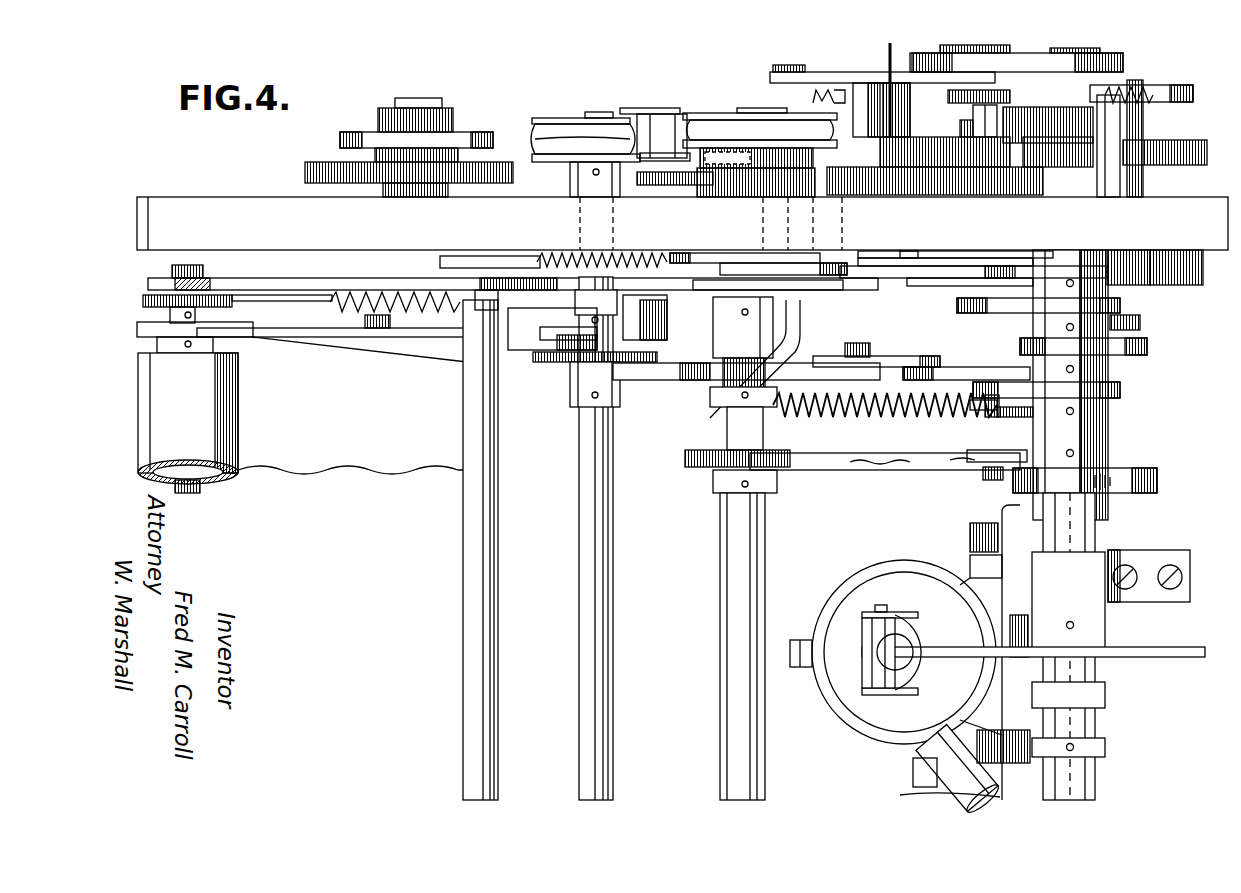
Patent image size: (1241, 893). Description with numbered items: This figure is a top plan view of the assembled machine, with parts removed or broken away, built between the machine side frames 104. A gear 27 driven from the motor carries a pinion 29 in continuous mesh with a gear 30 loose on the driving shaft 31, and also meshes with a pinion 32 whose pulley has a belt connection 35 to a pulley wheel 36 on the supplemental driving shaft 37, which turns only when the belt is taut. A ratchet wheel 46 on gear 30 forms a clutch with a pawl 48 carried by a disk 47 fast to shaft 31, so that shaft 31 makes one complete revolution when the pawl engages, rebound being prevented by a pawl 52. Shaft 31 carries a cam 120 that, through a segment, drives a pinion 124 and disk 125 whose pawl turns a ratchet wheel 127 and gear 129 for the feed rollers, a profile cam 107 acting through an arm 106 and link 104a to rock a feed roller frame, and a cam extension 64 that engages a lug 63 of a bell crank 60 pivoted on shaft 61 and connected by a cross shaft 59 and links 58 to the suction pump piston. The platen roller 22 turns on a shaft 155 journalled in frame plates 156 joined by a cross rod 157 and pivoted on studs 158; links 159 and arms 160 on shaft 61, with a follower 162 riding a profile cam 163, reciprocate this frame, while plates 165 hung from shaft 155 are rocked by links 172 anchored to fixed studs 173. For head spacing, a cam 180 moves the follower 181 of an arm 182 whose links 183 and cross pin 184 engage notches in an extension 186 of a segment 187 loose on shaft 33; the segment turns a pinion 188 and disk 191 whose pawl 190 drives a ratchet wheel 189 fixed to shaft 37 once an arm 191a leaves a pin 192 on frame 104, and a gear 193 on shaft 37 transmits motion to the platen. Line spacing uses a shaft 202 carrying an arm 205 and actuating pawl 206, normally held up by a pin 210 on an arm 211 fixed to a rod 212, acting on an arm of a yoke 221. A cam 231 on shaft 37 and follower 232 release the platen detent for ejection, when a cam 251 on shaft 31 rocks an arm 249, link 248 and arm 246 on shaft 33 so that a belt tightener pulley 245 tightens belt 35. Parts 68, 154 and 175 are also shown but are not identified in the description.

The platen roller 22 is at (222, 405).
The gear 27 is at (1020, 196).
The pinion 29 is at (892, 80).
The gear 30 is at (1196, 150).
The driving shaft 31 is at (1072, 52).
The pinion 32 is at (795, 195).
The shaft 33 is at (768, 530).
The belt connection 35 is at (596, 133).
The pulley wheel 36 is at (555, 120).
The supplemental driving shaft 37 is at (613, 565).
The ratchet wheel 46 is at (1140, 118).
The disk 47 is at (1180, 92).
The pawl 48 is at (983, 130).
The pawl 52 is at (1108, 90).
The links 58 is at (910, 613).
The cross shaft 59 is at (881, 606).
The bell crank 60 is at (947, 647).
The shaft 61 is at (1088, 779).
The lug 63 is at (1017, 614).
The cam extension 64 is at (1095, 630).
The cylinder 68 is at (960, 785).
The machine side frames 104 is at (262, 214).
The link 104a is at (1110, 250).
The arm 106 is at (1175, 262).
The profile cam 107 is at (1053, 263).
The cam 120 is at (1018, 60).
The pinion 124 is at (445, 108).
The disk 125 is at (463, 132).
The ratchet wheel 127 is at (368, 155).
The gear 129 is at (502, 180).
The collar 154 is at (1100, 745).
The shaft 155 is at (205, 271).
The frame plates 156 is at (283, 286).
The cross rod 157 is at (492, 578).
The pivot studs 158 is at (520, 258).
The links 159 is at (875, 282).
The arm 160 is at (950, 280).
The follower 162 is at (1135, 320).
The profile cam 163 is at (1130, 305).
The plates 165 is at (180, 330).
The link 172 is at (303, 325).
The fixed stud 173 is at (388, 327).
The link 175 is at (385, 377).
The cam 180 is at (1120, 390).
The follower 181 is at (1000, 388).
The arm 182 is at (955, 367).
The links 183 is at (860, 380).
The cross pin 184 is at (825, 410).
The extension 186 is at (857, 360).
The segment 187 is at (677, 374).
The pinion 188 is at (568, 374).
The ratchet wheel 189 is at (623, 347).
The pawl 190 is at (583, 338).
The disk 191 is at (540, 353).
The arm 191a is at (620, 335).
The pin 192 is at (603, 293).
The gear 193 is at (610, 260).
The shaft 202 is at (858, 225).
The arm 205 is at (855, 246).
The actuating pawl 206 is at (735, 260).
The pin 210 is at (698, 257).
The arm 211 is at (808, 285).
The rod 212 is at (900, 249).
The yoke 221 is at (782, 333).
The cam 231 is at (1147, 346).
The follower 232 is at (987, 357).
The belt tightener pulley 245 is at (638, 135).
The arm 246 is at (677, 182).
The link 248 is at (873, 470).
The arm 249 is at (995, 455).
The cam 251 is at (1157, 478).